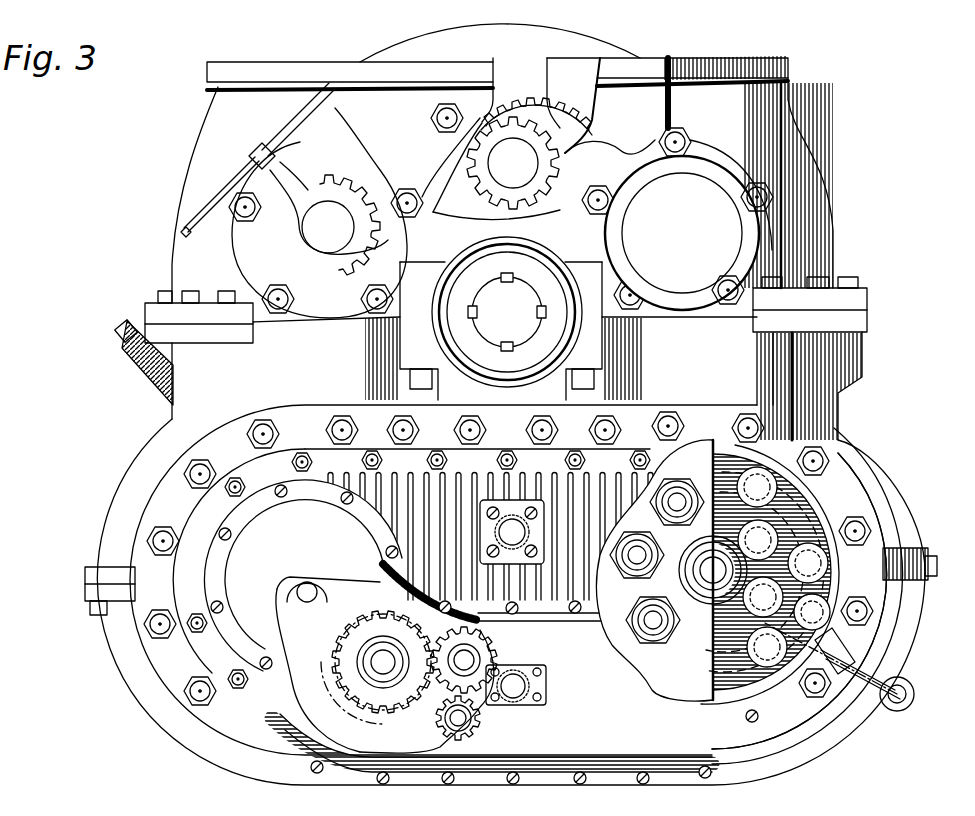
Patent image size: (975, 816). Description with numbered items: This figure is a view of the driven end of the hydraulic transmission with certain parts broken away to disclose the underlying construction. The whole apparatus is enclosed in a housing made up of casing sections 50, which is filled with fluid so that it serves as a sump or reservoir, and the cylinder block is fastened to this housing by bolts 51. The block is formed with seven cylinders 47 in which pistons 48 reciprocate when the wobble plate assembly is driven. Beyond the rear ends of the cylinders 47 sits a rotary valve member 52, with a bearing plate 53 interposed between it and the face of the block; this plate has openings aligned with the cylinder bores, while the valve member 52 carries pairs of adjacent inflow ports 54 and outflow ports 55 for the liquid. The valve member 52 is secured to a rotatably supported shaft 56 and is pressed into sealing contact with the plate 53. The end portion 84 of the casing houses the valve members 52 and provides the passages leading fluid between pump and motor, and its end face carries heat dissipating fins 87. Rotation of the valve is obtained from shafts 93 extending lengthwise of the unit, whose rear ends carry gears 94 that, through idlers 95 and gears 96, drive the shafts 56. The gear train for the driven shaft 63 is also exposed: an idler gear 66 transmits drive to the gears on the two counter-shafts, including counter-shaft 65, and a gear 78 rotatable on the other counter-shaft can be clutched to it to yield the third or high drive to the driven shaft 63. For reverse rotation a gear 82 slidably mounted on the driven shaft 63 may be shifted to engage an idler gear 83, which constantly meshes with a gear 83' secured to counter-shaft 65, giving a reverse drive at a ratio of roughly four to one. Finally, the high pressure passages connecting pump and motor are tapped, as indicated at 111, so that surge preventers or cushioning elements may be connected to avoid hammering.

The cylinders 47 is at (695, 665).
The pistons 48 is at (643, 632).
The casing sections 50 is at (192, 648).
The bolts 51 is at (200, 474).
The valve member 52 is at (778, 527).
The bearing plate 53 is at (805, 536).
The inflow ports 54 is at (880, 532).
The outflow ports 55 is at (818, 520).
The shaft 56 is at (307, 585).
The driven shaft 63 is at (492, 150).
The counter-shaft 65 is at (341, 225).
The idler gear 66 is at (560, 100).
The gear 78 is at (583, 144).
The gear 82 is at (456, 212).
The idler gear 83 is at (318, 168).
The gear 83' is at (224, 177).
The end portion of casing 84 is at (493, 599).
The heat dissipating fins 87 is at (560, 472).
The shafts 93 is at (515, 707).
The gears 94 is at (466, 743).
The idlers 95 is at (410, 628).
The gears 96 is at (308, 638).
The tap 111 is at (885, 641).